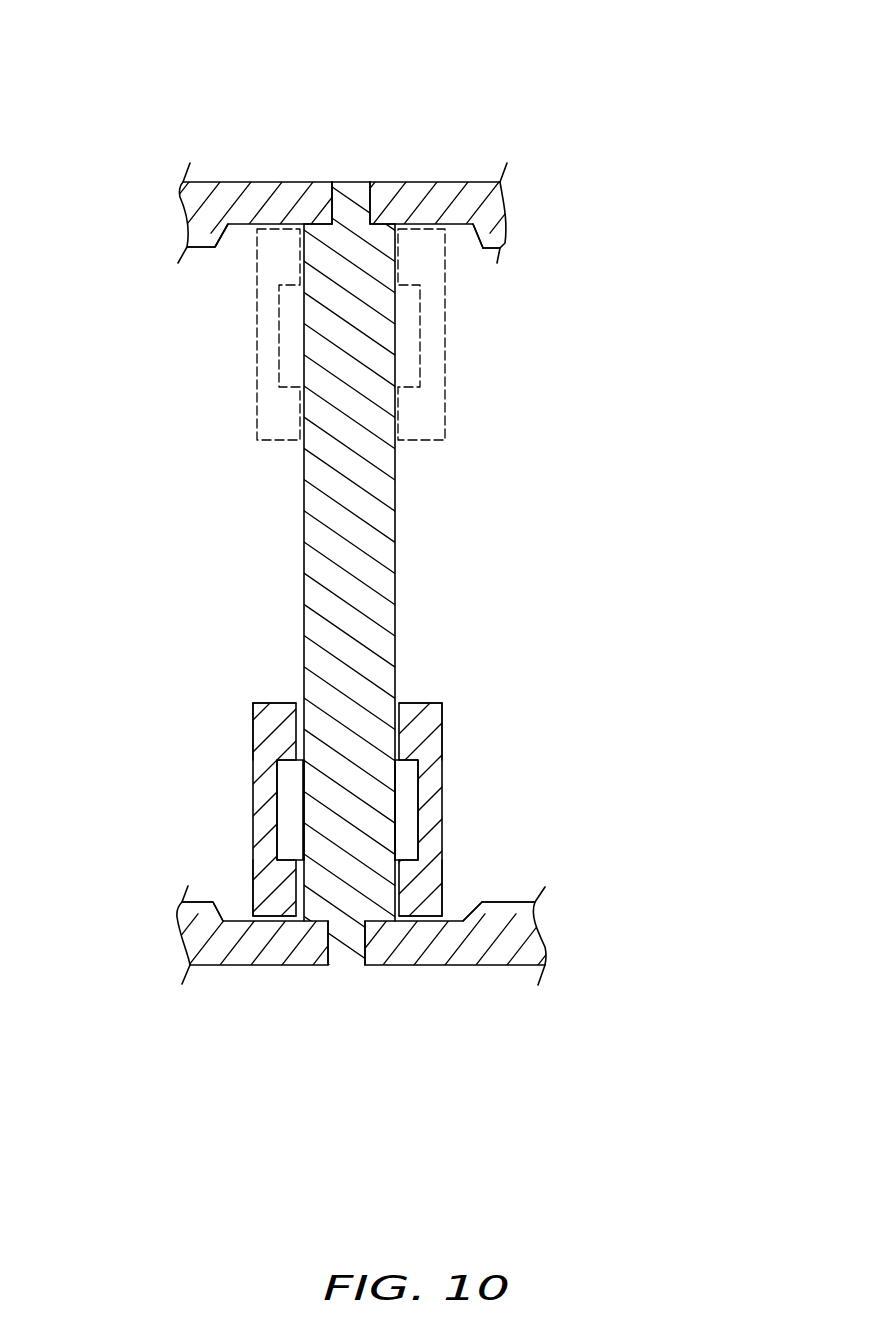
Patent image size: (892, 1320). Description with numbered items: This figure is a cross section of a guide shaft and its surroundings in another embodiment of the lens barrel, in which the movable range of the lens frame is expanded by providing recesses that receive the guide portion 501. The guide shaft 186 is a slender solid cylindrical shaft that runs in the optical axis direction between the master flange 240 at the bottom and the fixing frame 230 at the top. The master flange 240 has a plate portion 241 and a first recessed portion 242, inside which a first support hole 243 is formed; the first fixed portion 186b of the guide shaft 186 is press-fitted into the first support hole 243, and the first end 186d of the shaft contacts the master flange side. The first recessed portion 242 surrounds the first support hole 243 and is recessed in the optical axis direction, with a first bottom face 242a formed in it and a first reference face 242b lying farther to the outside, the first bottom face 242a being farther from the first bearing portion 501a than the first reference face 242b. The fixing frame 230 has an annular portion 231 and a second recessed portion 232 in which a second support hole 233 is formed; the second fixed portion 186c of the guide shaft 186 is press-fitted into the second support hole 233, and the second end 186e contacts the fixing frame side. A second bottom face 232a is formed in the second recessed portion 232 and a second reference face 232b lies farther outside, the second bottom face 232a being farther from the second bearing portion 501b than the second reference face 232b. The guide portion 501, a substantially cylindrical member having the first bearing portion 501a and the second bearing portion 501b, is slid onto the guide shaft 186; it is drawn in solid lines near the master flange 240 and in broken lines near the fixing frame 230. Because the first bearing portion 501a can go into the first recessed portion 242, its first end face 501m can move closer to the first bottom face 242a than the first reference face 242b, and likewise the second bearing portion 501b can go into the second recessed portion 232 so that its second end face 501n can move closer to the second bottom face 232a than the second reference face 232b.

The guide shaft 186 is at (376, 574).
The first fixed portion 186b is at (375, 508).
The second fixed portion 186c is at (355, 203).
The first end 186d is at (327, 853).
The second end 186e is at (377, 250).
The fixing frame 230 is at (448, 186).
The annular portion 231 is at (253, 203).
The second recessed portion 232 is at (218, 247).
The second bottom face 232a is at (460, 228).
The second reference face 232b is at (500, 258).
The second support hole 233 is at (343, 203).
The master flange 240 is at (406, 936).
The plate portion 241 is at (290, 947).
The first recessed portion 242 is at (222, 917).
The first bottom face 242a is at (492, 932).
The first reference face 242b is at (462, 921).
The first support hole 243 is at (363, 927).
The guide portion 501 is at (484, 640).
The first bearing portion 501a is at (437, 420).
The second bearing portion 501b is at (415, 270).
The first end face 501m is at (426, 917).
The second end face 501n is at (427, 229).